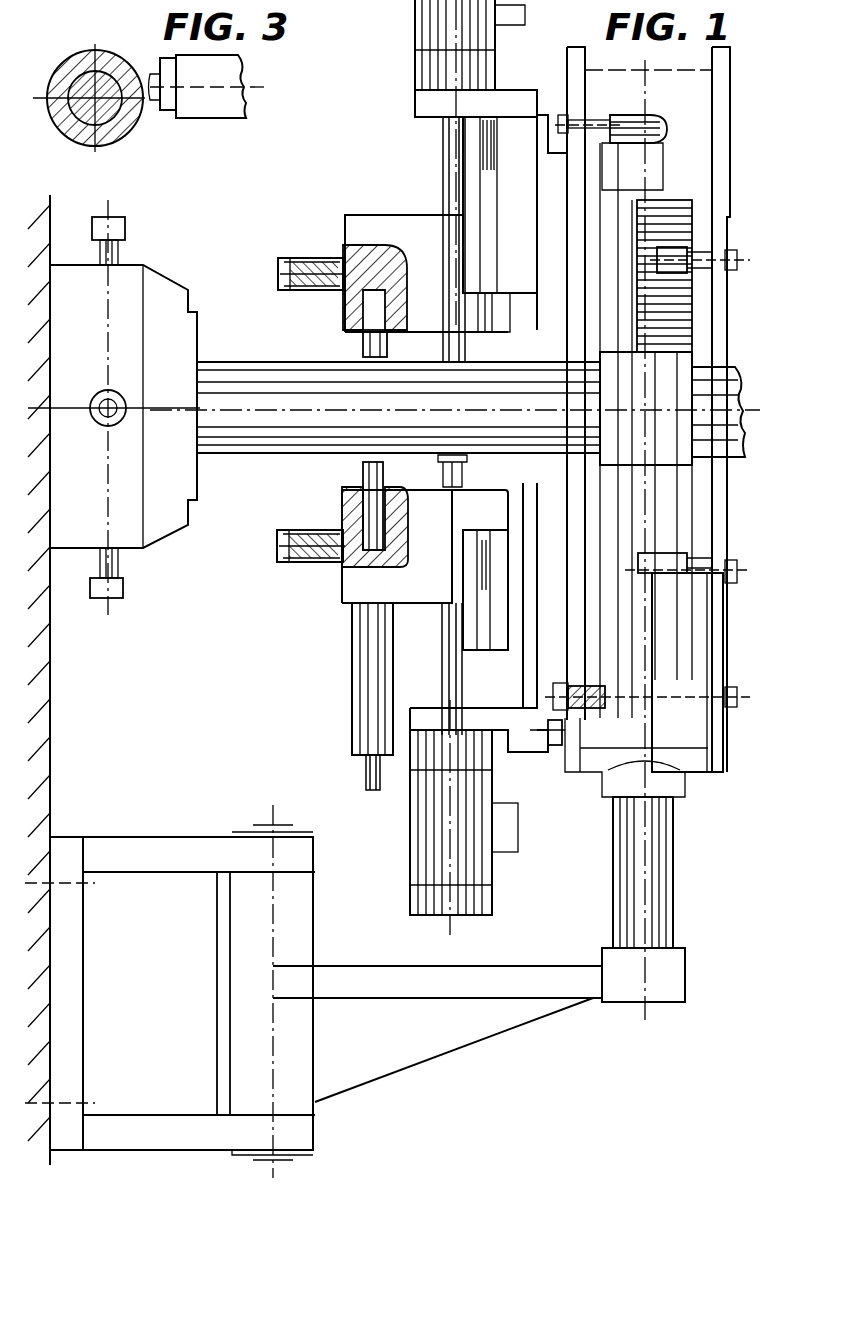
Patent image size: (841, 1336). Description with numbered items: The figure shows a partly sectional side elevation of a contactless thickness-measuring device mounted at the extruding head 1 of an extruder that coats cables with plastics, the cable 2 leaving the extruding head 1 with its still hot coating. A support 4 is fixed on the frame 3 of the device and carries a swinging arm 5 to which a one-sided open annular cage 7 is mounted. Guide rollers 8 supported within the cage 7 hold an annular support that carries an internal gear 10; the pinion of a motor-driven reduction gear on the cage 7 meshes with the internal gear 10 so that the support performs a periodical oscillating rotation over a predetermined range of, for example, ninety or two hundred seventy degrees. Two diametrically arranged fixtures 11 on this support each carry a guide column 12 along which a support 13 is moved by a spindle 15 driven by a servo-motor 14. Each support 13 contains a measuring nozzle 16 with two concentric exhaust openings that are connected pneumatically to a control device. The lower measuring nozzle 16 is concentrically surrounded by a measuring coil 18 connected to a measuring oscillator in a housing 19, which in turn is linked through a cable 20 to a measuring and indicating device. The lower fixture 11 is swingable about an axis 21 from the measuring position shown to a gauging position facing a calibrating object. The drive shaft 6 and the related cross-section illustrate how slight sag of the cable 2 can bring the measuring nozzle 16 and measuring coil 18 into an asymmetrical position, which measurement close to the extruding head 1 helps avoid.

In FIG. 1, the extruding head 1 is at (155, 290).
In FIG. 3, the cable 2 is at (93, 140).
In FIG. 1, the cable 2 is at (220, 380).
In FIG. 1, the frame 3 is at (35, 703).
In FIG. 1, the support 4 is at (155, 858).
In FIG. 1, the swinging arm 5 is at (470, 1020).
In FIG. 1, the drive shaft 6 is at (660, 875).
In FIG. 1, the annular cage 7 is at (695, 648).
In FIG. 1, the guide rollers 8 is at (668, 135).
In FIG. 1, the internal gear 10 is at (676, 320).
In FIG. 1, the fixture 11 is at (425, 103).
In FIG. 1, the guide column 12 is at (487, 135).
In FIG. 1, the support 13 is at (378, 228).
In FIG. 1, the servo-motor 14 is at (430, 27).
In FIG. 1, the spindle 15 is at (451, 175).
In FIG. 3, the measuring nozzle 16 is at (152, 92).
In FIG. 1, the measuring nozzle 16 is at (367, 345).
In FIG. 1, the measuring coil 18 is at (345, 487).
In FIG. 1, the housing 19 is at (375, 635).
In FIG. 1, the cable 20 is at (365, 765).
In FIG. 1, the axis 21 is at (557, 745).